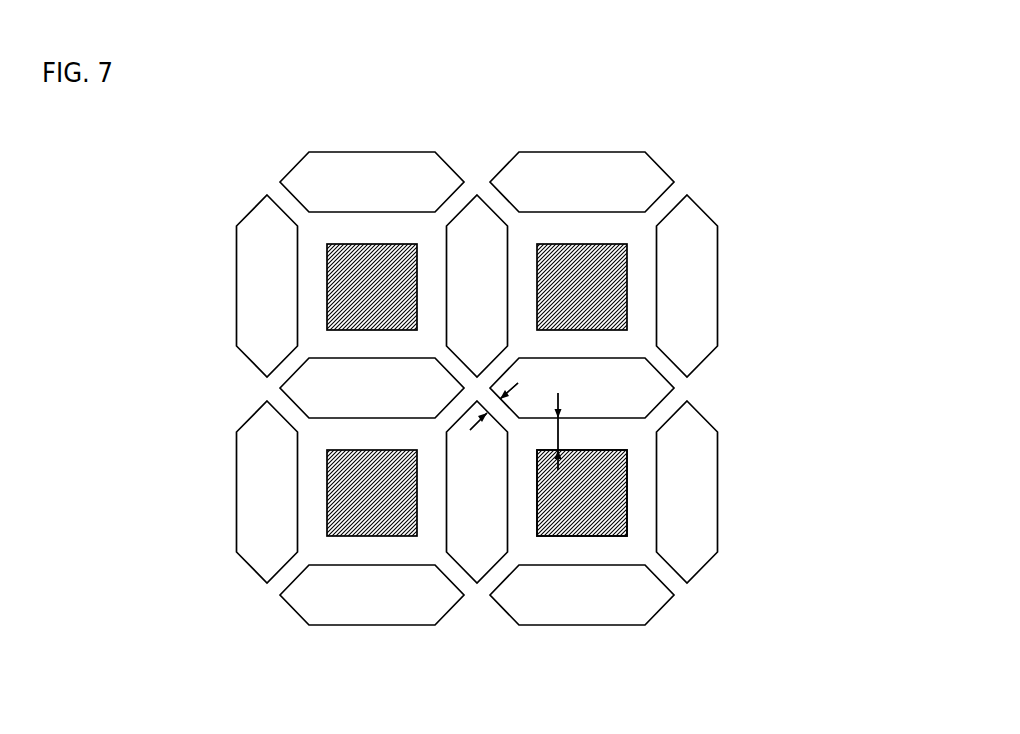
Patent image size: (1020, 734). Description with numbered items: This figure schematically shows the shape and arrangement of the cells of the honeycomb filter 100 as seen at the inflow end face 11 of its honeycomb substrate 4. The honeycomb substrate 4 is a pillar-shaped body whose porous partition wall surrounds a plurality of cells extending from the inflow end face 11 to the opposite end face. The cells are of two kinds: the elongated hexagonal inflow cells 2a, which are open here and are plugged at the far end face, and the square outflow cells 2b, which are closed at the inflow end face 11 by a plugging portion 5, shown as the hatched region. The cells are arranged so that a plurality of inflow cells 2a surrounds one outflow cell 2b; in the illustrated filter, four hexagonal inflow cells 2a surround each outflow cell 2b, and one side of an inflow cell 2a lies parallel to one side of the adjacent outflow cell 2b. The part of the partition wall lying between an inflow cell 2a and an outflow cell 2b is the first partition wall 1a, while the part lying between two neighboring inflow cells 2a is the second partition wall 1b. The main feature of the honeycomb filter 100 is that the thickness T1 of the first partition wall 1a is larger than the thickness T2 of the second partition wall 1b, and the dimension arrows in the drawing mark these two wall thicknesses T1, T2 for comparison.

The honeycomb filter 100 is at (764, 112).
The inflow end face 11 is at (430, 133).
The honeycomb substrate 4 is at (693, 188).
The inflow cell 2a is at (602, 390).
The outflow cell 2b is at (580, 487).
The plugging portion 5 is at (592, 520).
The first partition wall 1a is at (620, 432).
The second partition wall 1b is at (500, 399).
The thickness of the first partition wall T1 is at (562, 430).
The thickness of the second partition wall T2 is at (491, 394).